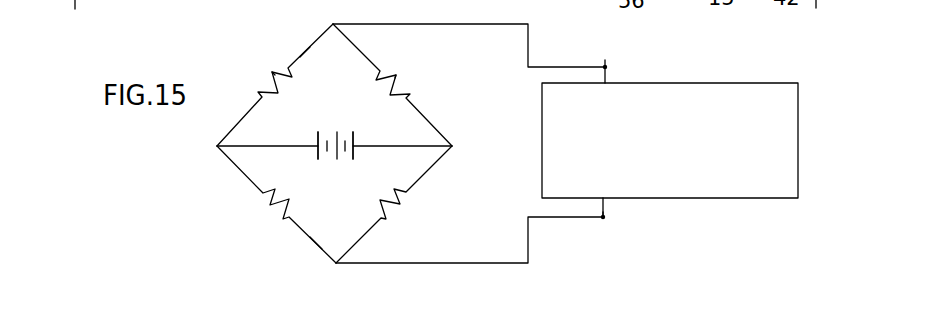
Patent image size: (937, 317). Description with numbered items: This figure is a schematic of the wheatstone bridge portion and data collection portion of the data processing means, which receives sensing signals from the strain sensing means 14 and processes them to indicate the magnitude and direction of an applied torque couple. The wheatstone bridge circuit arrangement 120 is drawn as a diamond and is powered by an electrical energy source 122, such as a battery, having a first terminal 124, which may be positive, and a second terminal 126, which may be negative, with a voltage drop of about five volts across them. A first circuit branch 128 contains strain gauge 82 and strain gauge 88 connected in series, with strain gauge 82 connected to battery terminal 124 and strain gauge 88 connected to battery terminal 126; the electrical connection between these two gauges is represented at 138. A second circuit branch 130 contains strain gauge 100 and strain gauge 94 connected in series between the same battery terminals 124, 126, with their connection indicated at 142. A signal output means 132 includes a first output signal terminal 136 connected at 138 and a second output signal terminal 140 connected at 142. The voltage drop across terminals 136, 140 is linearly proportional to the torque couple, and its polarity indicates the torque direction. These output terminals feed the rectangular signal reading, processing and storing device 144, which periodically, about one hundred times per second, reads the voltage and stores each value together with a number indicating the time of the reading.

The strain sensing means 14 is at (376, 86).
The strain gauge 82 is at (260, 88).
The strain gauge 88 is at (397, 80).
The strain gauge 94 is at (406, 200).
The strain gauge 100 is at (283, 202).
The wheatstone bridge circuit arrangement 120 is at (178, 62).
The electrical energy source 122 is at (334, 162).
The first terminal 124 is at (318, 157).
The second terminal 126 is at (354, 148).
The first circuit branch 128 is at (291, 57).
The second circuit branch 130 is at (320, 253).
The signal output means 132 is at (605, 56).
The first output signal terminal 136 is at (605, 67).
The electrical connection 138 is at (332, 24).
The second output signal terminal 140 is at (604, 217).
The connection 142 is at (336, 263).
The signal reading, processing and storing device 144 is at (684, 81).